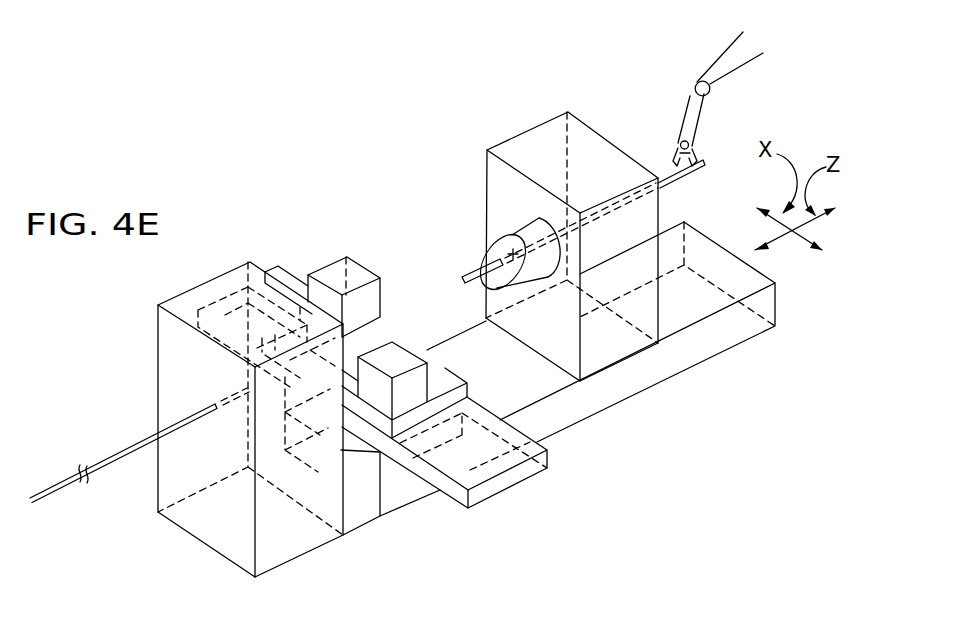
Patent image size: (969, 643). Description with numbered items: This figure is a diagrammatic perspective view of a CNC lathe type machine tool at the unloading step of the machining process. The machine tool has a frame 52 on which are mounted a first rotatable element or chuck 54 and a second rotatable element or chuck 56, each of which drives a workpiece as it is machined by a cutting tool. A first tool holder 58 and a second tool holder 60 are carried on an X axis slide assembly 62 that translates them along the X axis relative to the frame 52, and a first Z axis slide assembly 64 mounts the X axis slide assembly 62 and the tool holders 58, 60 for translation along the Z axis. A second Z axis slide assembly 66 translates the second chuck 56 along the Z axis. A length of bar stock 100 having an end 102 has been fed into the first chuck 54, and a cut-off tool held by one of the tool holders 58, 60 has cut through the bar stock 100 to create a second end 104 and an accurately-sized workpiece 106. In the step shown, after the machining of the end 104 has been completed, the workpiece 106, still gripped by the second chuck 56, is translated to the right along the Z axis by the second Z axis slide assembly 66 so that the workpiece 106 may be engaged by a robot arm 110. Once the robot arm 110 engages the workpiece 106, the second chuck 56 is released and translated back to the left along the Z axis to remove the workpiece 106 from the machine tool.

The frame 52 is at (340, 540).
The first rotatable element or chuck 54 is at (291, 270).
The second rotatable element or chuck 56 is at (490, 251).
The first tool holder 58 is at (408, 360).
The second tool holder 60 is at (337, 265).
The X axis slide assembly 62 is at (552, 471).
The first Z axis slide assembly 64 is at (366, 462).
The second Z axis slide assembly 66 is at (518, 149).
The bar stock 100 is at (110, 463).
The end 102 is at (697, 163).
The second end 104 is at (467, 279).
The workpiece 106 is at (670, 176).
The robot arm 110 is at (725, 73).